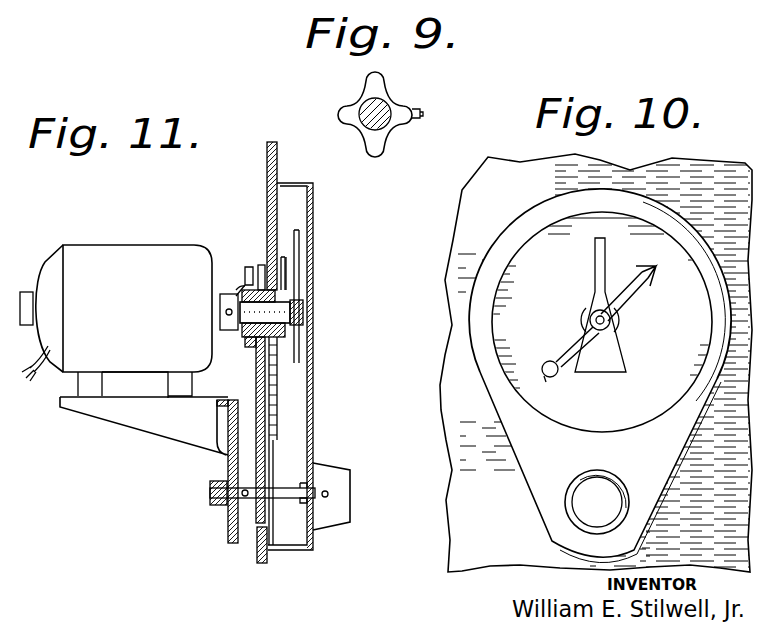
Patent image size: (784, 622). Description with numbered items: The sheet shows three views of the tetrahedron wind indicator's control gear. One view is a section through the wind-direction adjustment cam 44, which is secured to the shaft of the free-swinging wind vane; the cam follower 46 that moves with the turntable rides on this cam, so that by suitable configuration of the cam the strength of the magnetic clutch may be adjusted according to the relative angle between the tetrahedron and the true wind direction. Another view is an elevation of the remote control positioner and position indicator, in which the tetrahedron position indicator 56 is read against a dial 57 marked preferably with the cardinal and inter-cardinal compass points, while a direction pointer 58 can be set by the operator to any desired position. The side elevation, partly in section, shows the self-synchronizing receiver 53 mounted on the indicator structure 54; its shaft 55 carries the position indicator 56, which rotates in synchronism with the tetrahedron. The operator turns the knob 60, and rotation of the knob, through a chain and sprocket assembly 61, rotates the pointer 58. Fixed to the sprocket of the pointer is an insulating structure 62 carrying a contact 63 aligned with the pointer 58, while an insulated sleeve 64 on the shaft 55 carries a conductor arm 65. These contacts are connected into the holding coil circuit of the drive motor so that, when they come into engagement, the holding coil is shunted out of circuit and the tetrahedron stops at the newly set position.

In FIG. 9, the cam 44 is at (393, 93).
In FIG. 9, the cam follower 46 is at (417, 118).
In FIG. 11, the self-synchronizing receiver 53 is at (113, 253).
In FIG. 10, the indicator structure 54 is at (444, 442).
In FIG. 11, the indicator structure 54 is at (165, 448).
In FIG. 11, the shaft 55 is at (305, 306).
In FIG. 10, the tetrahedron position indicator 56 is at (607, 253).
In FIG. 11, the tetrahedron position indicator 56 is at (300, 267).
In FIG. 10, the dial 57 is at (688, 293).
In FIG. 10, the direction pointer 58 is at (636, 282).
In FIG. 11, the direction pointer 58 is at (286, 257).
In FIG. 10, the knob 60 is at (613, 512).
In FIG. 11, the knob 60 is at (333, 518).
In FIG. 11, the chain and sprocket assembly 61 is at (223, 455).
In FIG. 11, the insulating structure 62 is at (258, 264).
In FIG. 11, the contact 63 is at (243, 265).
In FIG. 11, the insulated sleeve 64 is at (232, 332).
In FIG. 11, the conductor arm 65 is at (238, 292).